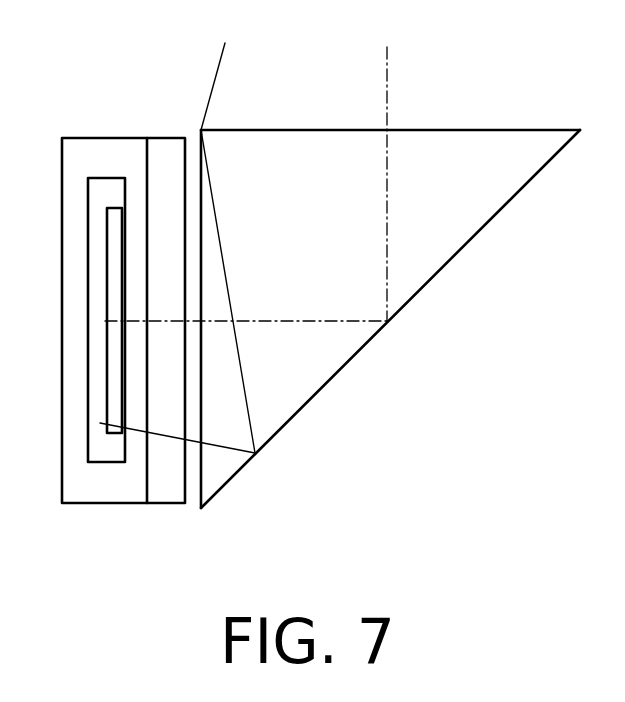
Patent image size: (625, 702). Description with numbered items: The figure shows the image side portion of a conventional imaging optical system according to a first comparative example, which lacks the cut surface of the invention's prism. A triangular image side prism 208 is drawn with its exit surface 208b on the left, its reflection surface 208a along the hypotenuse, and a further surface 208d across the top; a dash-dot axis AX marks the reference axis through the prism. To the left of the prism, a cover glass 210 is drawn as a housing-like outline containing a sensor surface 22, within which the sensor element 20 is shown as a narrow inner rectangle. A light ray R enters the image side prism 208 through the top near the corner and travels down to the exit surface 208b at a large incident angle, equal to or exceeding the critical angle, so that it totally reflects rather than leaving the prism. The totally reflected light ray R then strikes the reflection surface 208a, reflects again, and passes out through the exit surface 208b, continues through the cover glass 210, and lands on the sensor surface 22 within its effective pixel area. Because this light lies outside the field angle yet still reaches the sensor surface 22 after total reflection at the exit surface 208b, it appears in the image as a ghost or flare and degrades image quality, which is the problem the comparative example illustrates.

The light emitting element 20 is at (108, 444).
The sensor surface 22 is at (127, 274).
The cover glass 210 is at (168, 150).
The image side prism 208 is at (352, 310).
The reflection surface 208a is at (438, 270).
The exit surface 208b is at (200, 443).
The exit surface of prism 208d is at (530, 129).
The light ray R is at (216, 66).
The optical axis AX is at (387, 73).